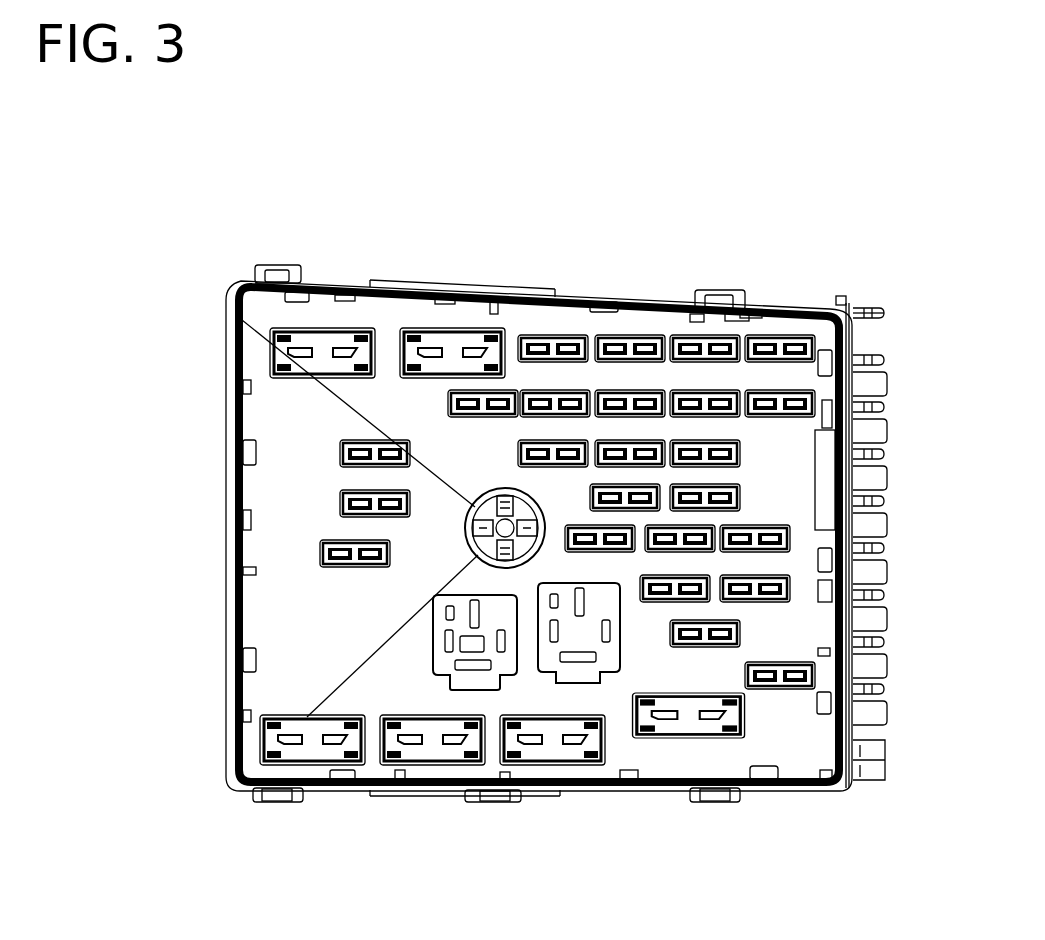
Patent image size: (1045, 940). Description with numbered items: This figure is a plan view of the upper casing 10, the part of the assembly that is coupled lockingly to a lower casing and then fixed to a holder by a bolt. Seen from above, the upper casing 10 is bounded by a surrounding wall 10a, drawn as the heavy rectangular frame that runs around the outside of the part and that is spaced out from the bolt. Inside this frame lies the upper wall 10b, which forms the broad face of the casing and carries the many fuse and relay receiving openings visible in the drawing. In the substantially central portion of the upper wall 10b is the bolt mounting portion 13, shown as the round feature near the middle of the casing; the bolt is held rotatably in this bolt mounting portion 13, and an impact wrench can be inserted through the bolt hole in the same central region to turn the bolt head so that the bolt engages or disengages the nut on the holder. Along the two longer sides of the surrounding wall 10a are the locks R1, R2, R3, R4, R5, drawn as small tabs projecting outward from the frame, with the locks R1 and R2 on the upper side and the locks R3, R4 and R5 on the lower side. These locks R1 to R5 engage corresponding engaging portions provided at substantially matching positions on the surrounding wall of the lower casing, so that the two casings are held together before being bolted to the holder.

The upper casing 10 is at (228, 253).
The surrounding wall 10a is at (536, 283).
The upper wall 10b is at (272, 483).
The bolt mounting portion 13 is at (470, 535).
The lock R1 is at (278, 268).
The lock R2 is at (722, 292).
The lock R3 is at (276, 802).
The lock R4 is at (496, 803).
The lock R5 is at (716, 802).